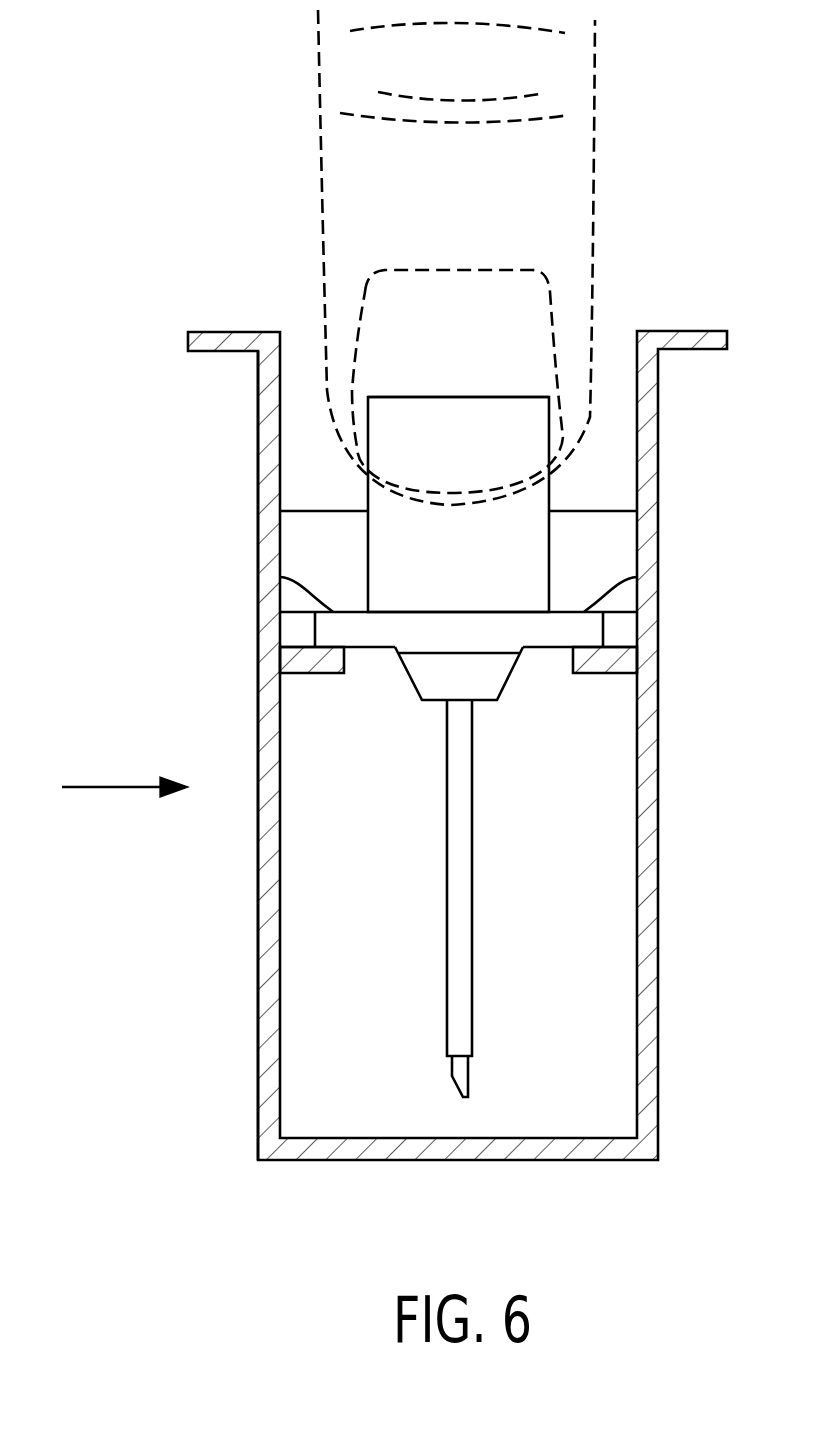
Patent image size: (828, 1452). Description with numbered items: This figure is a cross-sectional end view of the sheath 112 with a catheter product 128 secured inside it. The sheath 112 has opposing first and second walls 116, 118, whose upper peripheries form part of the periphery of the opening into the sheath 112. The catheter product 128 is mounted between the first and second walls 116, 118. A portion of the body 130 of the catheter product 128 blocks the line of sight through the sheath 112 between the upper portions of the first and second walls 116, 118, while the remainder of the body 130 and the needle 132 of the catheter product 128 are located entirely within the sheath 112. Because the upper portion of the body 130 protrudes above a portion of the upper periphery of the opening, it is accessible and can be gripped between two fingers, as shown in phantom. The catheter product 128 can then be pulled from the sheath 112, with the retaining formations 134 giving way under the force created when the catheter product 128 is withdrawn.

The sheath 112 is at (120, 767).
The first wall 116 is at (660, 800).
The second wall 118 is at (258, 907).
The catheter product 128 is at (483, 601).
The body 130 is at (448, 413).
The needle 132 is at (470, 1069).
The retaining formations 134 is at (310, 592).